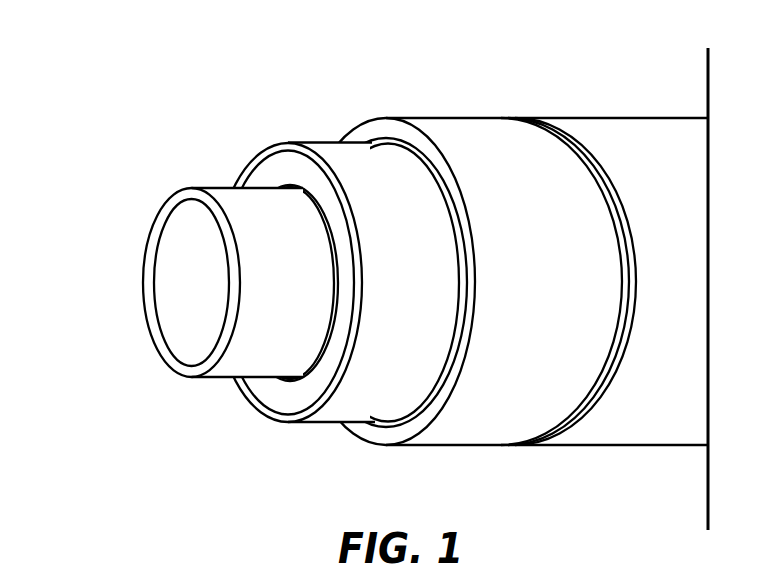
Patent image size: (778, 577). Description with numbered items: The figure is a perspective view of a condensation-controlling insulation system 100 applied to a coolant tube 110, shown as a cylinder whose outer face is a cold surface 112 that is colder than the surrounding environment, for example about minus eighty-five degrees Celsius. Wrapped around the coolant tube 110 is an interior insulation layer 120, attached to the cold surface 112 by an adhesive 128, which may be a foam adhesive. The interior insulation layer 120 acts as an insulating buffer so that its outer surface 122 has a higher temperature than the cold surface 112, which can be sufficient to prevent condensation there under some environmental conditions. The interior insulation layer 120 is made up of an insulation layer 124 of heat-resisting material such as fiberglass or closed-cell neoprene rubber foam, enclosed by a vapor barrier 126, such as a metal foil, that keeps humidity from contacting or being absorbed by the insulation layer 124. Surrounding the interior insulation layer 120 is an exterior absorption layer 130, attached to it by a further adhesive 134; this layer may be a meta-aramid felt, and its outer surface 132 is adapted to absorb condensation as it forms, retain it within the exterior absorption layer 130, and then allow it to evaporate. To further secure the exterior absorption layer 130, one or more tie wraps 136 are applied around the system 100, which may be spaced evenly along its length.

The condensation-controlling insulation system 100 is at (122, 47).
The coolant tube 110 is at (218, 188).
The cold surface 112 is at (250, 365).
The interior insulation layer 120 is at (323, 142).
The outer surface of the interior insulation layer 122 is at (350, 398).
The insulation layer 124 is at (282, 426).
The vapor barrier 126 is at (287, 410).
The adhesive 128 is at (324, 330).
The exterior absorption layer 130 is at (453, 118).
The outer surface of the exterior absorption layer 132 is at (476, 424).
The adhesive 134 is at (455, 330).
The tie wraps 136 is at (546, 118).